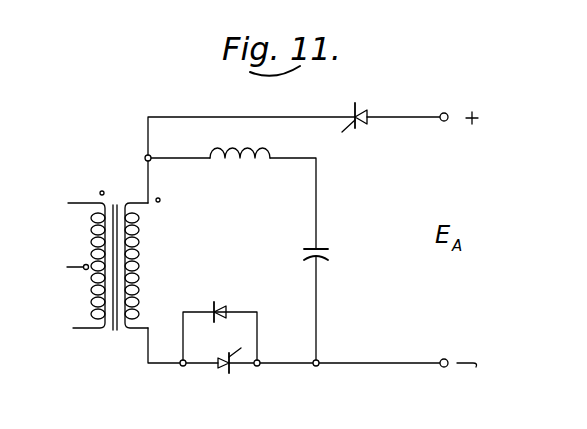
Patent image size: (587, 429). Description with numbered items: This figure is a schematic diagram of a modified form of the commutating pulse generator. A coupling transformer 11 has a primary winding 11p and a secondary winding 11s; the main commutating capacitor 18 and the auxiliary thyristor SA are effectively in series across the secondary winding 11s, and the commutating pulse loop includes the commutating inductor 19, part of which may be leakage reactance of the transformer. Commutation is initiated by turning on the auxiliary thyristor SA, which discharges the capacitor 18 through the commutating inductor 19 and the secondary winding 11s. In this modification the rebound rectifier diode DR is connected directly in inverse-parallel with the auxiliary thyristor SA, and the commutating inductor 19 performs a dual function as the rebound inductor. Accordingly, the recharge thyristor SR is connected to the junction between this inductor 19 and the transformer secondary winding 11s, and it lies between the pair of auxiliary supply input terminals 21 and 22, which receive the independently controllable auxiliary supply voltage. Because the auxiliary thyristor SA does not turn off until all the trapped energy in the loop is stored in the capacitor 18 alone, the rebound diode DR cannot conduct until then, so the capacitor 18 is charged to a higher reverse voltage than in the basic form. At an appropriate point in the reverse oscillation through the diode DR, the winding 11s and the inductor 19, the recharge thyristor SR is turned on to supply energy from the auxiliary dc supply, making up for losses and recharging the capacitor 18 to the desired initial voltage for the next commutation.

The coupling transformer 11 is at (112, 192).
The transformer primary winding 11p is at (92, 247).
The secondary winding 11s is at (138, 256).
The commutating capacitor 18 is at (327, 243).
The commutating inductor 19 is at (229, 172).
The auxiliary supply input terminal 21 is at (451, 113).
The auxiliary supply input terminal 22 is at (450, 361).
The recharge thyristor SR is at (362, 126).
The rebound rectifier diode DR is at (220, 321).
The auxiliary thyristor SA is at (227, 375).